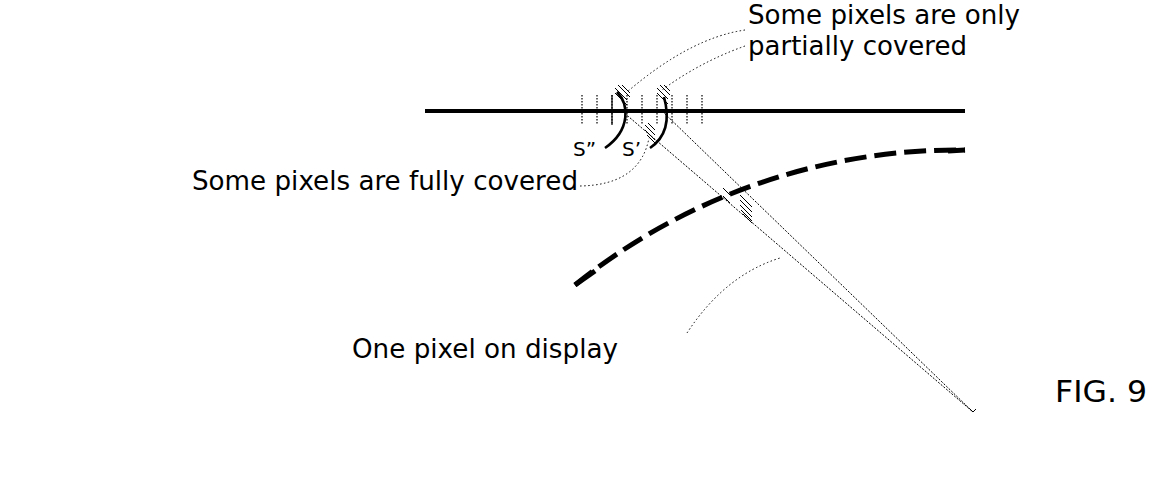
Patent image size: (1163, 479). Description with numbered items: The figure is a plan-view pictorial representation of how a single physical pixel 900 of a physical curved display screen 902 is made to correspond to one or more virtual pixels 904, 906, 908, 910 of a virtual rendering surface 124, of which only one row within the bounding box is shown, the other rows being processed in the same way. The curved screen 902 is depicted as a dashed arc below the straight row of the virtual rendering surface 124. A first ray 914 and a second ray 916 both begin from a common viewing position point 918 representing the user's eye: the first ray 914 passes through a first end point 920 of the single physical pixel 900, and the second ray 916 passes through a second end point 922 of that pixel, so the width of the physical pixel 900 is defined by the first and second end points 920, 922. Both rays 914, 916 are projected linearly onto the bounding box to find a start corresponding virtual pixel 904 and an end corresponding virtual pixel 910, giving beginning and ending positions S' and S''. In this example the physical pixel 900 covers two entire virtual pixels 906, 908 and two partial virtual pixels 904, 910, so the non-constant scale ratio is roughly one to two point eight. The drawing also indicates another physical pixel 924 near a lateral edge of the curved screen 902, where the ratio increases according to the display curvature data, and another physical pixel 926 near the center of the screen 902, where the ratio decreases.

The virtual rendering surface 124 is at (800, 111).
The single physical pixel 900 is at (723, 191).
The physical curved display screen 902 is at (817, 172).
The virtual pixel 904 is at (665, 97).
The virtual pixel 906 is at (650, 97).
The virtual pixel 908 is at (637, 97).
The virtual pixel 910 is at (625, 97).
The first ray 914 is at (832, 277).
The second ray 916 is at (818, 283).
The common viewing position point 918 is at (973, 413).
The first end point 920 is at (747, 193).
The second end point 922 is at (723, 194).
The another physical pixel 924 is at (586, 287).
The another physical pixel 926 is at (958, 152).